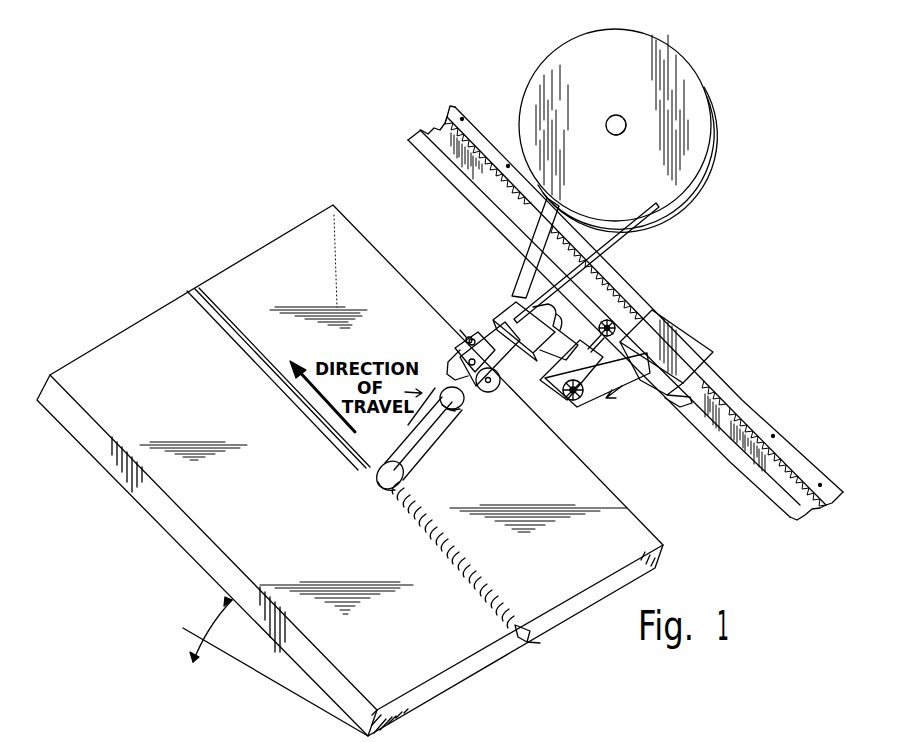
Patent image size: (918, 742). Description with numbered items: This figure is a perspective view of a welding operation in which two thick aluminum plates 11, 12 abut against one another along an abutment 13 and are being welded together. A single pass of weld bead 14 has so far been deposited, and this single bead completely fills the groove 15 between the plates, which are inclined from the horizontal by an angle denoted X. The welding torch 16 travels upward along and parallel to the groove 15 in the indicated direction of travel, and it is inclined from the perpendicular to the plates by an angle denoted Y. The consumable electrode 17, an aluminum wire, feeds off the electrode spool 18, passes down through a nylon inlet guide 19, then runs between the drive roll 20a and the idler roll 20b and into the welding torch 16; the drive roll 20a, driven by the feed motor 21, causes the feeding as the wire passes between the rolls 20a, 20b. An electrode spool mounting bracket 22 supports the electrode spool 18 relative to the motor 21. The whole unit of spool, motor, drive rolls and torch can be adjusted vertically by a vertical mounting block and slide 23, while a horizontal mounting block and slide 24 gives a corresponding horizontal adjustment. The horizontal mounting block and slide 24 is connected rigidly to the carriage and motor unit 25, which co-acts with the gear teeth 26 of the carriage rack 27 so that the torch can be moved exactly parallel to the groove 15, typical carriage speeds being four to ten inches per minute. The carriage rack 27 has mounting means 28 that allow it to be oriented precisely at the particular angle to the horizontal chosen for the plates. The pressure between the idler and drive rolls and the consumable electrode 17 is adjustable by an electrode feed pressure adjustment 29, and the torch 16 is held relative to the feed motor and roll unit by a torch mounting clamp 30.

The aluminum plate 11 is at (243, 493).
The aluminum plate 12 is at (552, 488).
The abutment 13 is at (530, 636).
The weld bead 14 is at (478, 576).
The groove 15 is at (317, 427).
The welding torch 16 is at (416, 446).
The consumable electrode 17 is at (608, 237).
The electrode spool 18 is at (571, 55).
The nylon inlet guide 19 is at (512, 377).
The drive roll 20a is at (493, 396).
The idler roll 20b is at (465, 365).
The feed motor 21 is at (514, 307).
The electrode spool mounting bracket 22 is at (510, 274).
The vertical mounting block and slide 23 is at (545, 407).
The horizontal mounting block and slide 24 is at (606, 396).
The carriage and motor unit 25 is at (683, 330).
The gear teeth 26 is at (783, 477).
The carriage rack 27 is at (752, 416).
The mounting means 28 is at (440, 128).
The electrode feed pressure adjustment 29 is at (465, 343).
The torch mounting clamp 30 is at (457, 414).